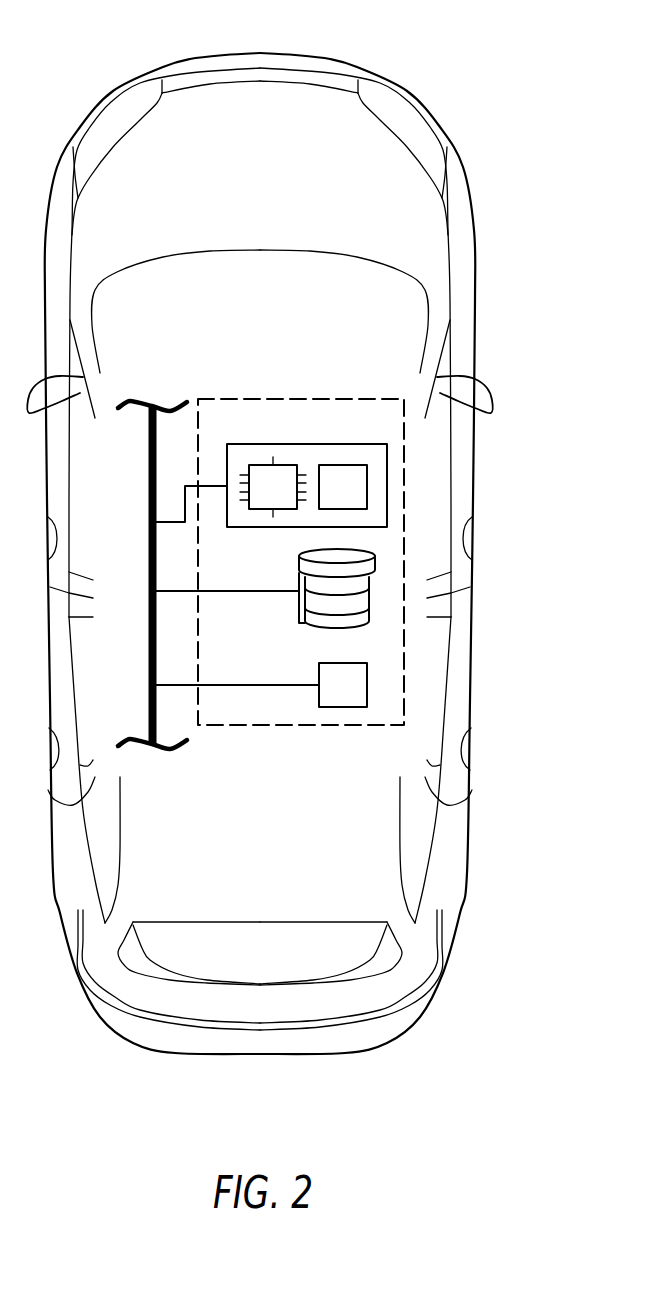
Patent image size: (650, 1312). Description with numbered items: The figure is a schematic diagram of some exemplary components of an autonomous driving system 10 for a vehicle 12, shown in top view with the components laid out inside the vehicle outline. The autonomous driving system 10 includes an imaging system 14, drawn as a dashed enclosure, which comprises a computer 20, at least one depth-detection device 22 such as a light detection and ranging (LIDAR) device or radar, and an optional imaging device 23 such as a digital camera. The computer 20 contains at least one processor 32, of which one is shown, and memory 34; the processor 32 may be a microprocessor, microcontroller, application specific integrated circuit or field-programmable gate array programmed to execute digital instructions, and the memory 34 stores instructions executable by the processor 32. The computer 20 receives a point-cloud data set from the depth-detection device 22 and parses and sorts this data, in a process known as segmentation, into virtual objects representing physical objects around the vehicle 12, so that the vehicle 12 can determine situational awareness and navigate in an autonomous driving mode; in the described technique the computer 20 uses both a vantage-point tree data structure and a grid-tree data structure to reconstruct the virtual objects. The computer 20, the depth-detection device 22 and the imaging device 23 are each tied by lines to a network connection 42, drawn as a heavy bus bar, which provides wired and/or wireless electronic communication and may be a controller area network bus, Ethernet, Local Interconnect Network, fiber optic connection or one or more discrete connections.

The autonomous driving system 10 is at (257, 755).
The vehicle 12 is at (184, 55).
The imaging system 14 is at (407, 458).
The computer 20 is at (307, 466).
The depth-detection device 22 is at (290, 565).
The imaging device 23 is at (351, 700).
The processor 32 is at (281, 502).
The memory 34 is at (351, 502).
The network connection 42 is at (147, 476).